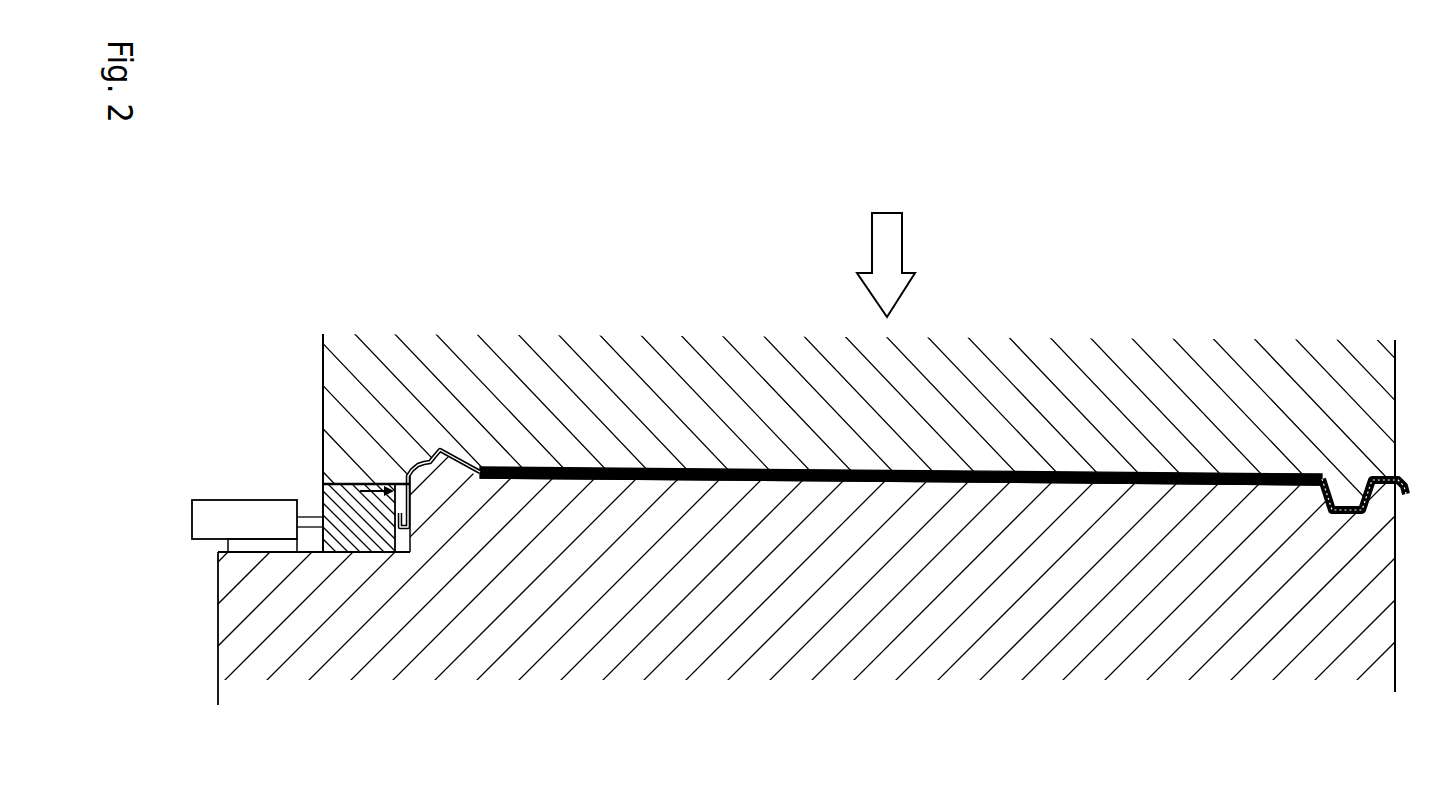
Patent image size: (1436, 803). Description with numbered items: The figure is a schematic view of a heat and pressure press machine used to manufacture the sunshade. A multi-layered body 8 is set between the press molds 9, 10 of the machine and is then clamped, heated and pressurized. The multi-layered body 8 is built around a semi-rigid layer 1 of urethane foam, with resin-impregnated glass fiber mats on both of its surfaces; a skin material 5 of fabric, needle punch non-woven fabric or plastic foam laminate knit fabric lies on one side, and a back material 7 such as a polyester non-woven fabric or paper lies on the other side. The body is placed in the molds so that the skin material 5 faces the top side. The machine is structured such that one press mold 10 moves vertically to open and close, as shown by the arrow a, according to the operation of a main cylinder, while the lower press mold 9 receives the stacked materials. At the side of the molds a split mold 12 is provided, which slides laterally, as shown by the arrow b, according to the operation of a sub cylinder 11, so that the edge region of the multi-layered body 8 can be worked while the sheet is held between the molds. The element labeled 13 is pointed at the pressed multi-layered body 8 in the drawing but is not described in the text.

The semi-rigid layer 1 is at (685, 467).
The skin material 5 is at (743, 467).
The back material 7 is at (728, 479).
The multi-layered body 8 is at (1098, 487).
The press mold 9 is at (1397, 553).
The press mold 10 is at (1397, 378).
The sub cylinder 11 is at (237, 506).
The split mold 12 is at (328, 500).
The bead portion 13 is at (900, 469).
The arrow a is at (881, 265).
The arrow b is at (372, 483).